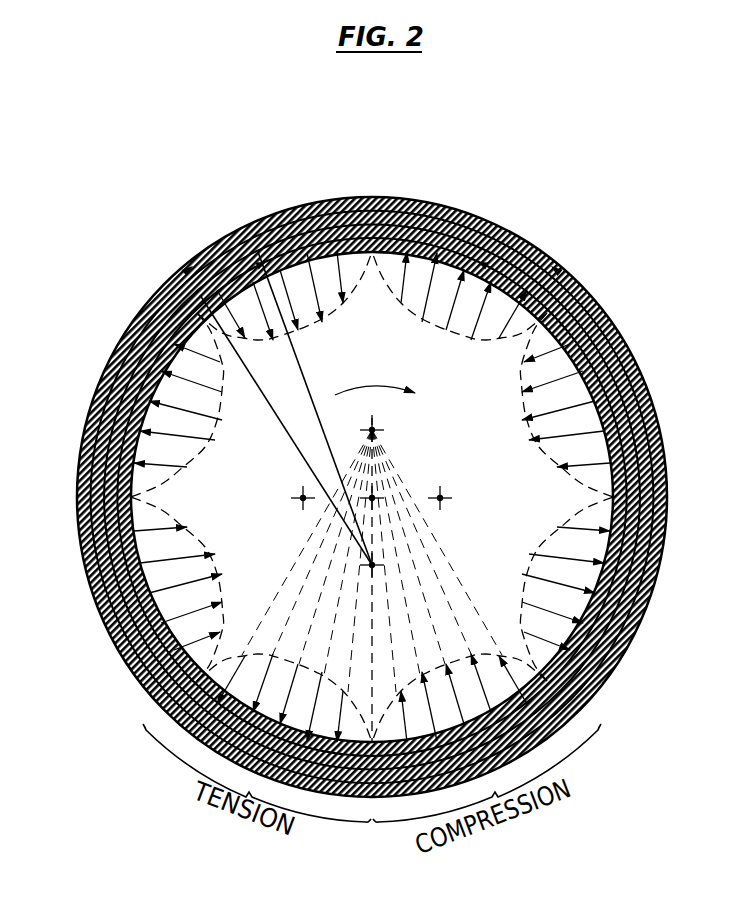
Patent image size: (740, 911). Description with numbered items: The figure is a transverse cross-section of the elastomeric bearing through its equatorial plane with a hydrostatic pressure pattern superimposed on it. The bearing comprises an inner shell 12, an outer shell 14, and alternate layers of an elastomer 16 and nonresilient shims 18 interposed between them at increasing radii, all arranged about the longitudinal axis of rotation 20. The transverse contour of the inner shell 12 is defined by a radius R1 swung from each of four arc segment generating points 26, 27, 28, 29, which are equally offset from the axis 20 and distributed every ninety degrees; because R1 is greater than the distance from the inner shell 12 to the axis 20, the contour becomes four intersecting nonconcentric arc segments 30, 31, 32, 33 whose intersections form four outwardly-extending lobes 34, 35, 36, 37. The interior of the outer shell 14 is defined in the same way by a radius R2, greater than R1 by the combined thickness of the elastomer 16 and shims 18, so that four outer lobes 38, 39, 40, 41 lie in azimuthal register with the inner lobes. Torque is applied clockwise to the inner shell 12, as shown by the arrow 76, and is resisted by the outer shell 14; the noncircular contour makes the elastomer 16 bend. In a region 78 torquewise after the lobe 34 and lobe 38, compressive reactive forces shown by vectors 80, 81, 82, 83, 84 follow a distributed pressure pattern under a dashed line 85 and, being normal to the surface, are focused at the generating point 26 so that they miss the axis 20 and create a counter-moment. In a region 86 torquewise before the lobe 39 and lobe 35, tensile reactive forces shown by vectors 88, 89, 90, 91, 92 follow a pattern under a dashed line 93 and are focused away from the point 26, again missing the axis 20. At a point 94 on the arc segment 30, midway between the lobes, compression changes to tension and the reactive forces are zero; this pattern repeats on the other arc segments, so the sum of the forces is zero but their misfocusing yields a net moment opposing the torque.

The inner shell 12 is at (88, 456).
The outer shell 14 is at (98, 433).
The elastomer 16 is at (109, 397).
The nonresilient shims 18 is at (117, 361).
The longitudinal axis of rotation 20 is at (377, 504).
The arc segment generating point 26 is at (375, 429).
The arc segment generating point 27 is at (443, 497).
The arc segment generating point 28 is at (373, 570).
The arc segment generating point 29 is at (301, 496).
The arc segment 30 is at (369, 843).
The arc segment 31 is at (76, 505).
The arc segment 32 is at (374, 164).
The arc segment 33 is at (670, 466).
The outwardly-extending lobe 34 is at (604, 697).
The outwardly-extending lobe 35 is at (148, 698).
The outwardly-extending lobe 36 is at (186, 270).
The outwardly-extending lobe 37 is at (559, 270).
The outwardly-extending lobe 38 is at (598, 727).
The outwardly-extending lobe 39 is at (152, 721).
The outwardly-extending lobe 40 is at (160, 281).
The outwardly-extending lobe 41 is at (588, 284).
The arrow 76 is at (388, 388).
The region 78 is at (561, 772).
The vector 80 is at (405, 717).
The vector 81 is at (432, 712).
The vector 82 is at (459, 703).
The vector 83 is at (486, 697).
The vector 84 is at (516, 687).
The dashed line 85 is at (516, 656).
The region 86 is at (190, 776).
The vector 88 is at (231, 680).
The vector 89 is at (261, 688).
The vector 90 is at (289, 694).
The vector 91 is at (316, 698).
The vector 92 is at (341, 708).
The dashed line 93 is at (229, 652).
The point 94 is at (396, 705).
The radius R1 is at (315, 408).
The radius R2 is at (286, 430).